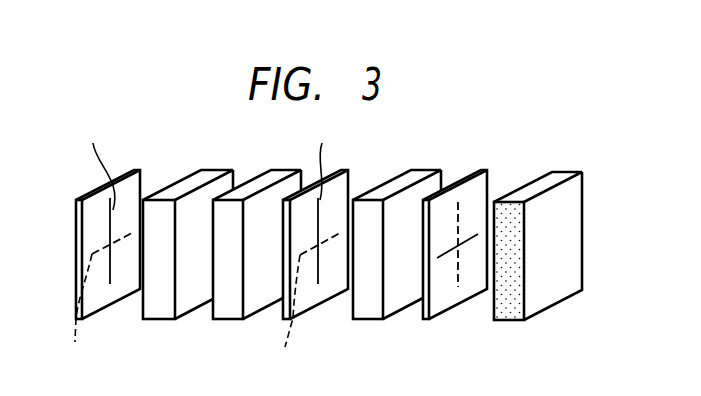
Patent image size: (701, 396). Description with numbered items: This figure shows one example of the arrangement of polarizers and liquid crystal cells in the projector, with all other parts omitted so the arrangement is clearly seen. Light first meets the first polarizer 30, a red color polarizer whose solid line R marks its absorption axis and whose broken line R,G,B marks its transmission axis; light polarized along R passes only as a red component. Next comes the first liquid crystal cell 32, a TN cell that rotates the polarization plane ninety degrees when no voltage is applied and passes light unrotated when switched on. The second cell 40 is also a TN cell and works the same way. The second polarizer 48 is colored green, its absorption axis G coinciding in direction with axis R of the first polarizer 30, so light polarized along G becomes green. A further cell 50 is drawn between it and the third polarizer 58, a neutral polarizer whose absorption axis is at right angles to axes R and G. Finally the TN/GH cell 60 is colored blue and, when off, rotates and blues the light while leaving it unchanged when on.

The first polarizer 30 is at (138, 169).
The first liquid crystal cell 32 is at (163, 319).
The second cell 40 is at (260, 170).
The second polarizer 48 is at (347, 170).
The third liquid crystal cell 50 is at (373, 319).
The third polarizer 58 is at (488, 170).
The TN/GH cell 60 is at (512, 321).